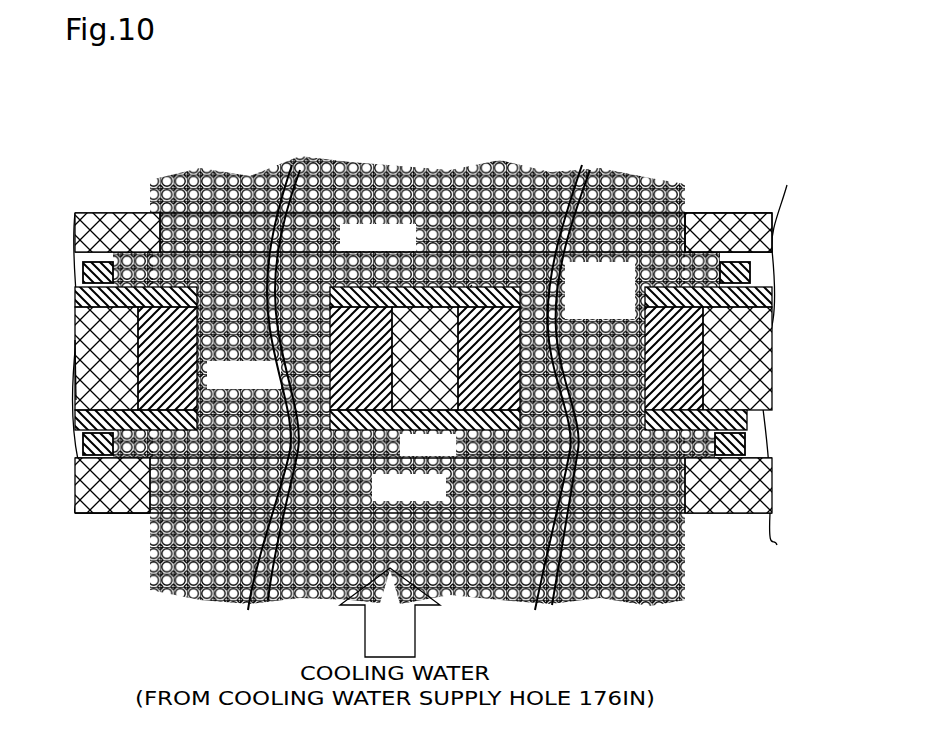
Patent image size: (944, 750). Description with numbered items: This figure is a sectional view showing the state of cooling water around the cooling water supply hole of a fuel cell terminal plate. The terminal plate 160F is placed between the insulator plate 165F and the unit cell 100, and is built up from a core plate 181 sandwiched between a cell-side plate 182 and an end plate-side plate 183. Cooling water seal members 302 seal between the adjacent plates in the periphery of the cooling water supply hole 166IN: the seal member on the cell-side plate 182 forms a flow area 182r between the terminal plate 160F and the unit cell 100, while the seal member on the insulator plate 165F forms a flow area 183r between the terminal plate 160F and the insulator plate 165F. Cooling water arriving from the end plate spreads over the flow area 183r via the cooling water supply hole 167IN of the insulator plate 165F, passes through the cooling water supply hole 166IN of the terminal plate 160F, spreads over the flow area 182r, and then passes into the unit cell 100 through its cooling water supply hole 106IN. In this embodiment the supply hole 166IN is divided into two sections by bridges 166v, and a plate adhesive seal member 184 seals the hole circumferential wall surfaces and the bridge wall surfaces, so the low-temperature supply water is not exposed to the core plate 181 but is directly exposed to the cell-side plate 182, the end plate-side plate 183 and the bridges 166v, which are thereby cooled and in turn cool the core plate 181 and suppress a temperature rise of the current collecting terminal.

The unit cell 100 is at (712, 227).
The cooling water seal member 302 is at (57, 245).
The core plate 181 is at (75, 213).
The cell-side plate 182 is at (115, 347).
The end plate-side plate 183 is at (92, 445).
The plate adhesive seal member 184 is at (268, 565).
The bridge 166v is at (471, 286).
The terminal plate 160F is at (78, 402).
The insulator plate 165F is at (128, 510).
The cooling water supply hole 106IN is at (412, 249).
The cooling water supply hole 166IN is at (278, 386).
The cooling water supply hole 167IN is at (442, 500).
The flow area 182r is at (612, 290).
The flow area 183r is at (428, 445).